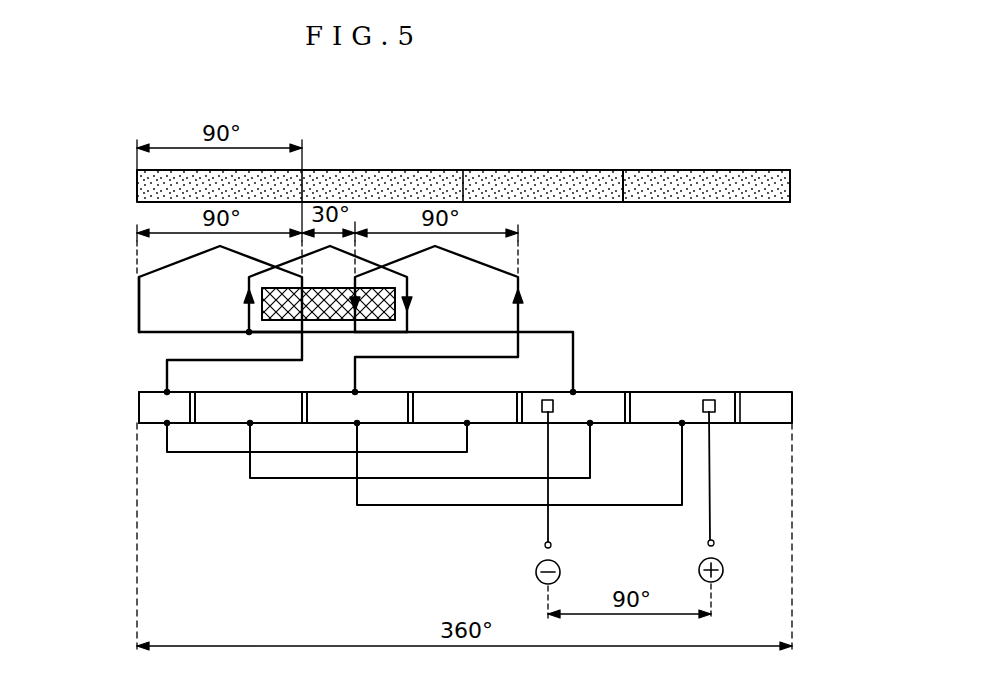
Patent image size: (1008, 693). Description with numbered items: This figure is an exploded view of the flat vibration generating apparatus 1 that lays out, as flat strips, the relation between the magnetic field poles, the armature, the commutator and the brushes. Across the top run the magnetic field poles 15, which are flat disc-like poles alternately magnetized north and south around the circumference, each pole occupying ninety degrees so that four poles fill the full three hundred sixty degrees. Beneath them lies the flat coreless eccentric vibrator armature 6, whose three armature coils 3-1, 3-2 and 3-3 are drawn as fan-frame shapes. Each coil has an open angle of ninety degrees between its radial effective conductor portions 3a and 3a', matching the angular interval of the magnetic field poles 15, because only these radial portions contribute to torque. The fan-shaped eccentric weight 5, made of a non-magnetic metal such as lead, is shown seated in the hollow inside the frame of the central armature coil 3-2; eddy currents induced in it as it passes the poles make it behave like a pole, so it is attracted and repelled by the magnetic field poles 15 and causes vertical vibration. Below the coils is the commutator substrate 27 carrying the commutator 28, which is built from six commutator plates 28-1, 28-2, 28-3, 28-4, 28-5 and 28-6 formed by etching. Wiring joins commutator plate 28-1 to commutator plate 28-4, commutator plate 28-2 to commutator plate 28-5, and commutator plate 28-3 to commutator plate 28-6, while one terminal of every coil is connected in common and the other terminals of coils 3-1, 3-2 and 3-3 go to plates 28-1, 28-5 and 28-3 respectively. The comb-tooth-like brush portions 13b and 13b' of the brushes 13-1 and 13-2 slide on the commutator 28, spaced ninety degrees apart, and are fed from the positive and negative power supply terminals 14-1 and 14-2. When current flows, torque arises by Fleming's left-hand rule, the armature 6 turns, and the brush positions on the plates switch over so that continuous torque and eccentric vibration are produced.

The flat vibration generating apparatus 1 is at (616, 155).
The magnetic field poles 15 is at (775, 185).
The flat coreless eccentric vibrator armature 6 is at (328, 305).
The armature coil 3-1 is at (165, 260).
The armature coil 3-2 is at (380, 256).
The armature coil 3-3 is at (528, 289).
The effective conductor portion 3a is at (97, 324).
The effective conductor portion 3a' is at (287, 300).
The eccentric weight 5 is at (335, 321).
The commutator substrate 27 is at (448, 445).
The commutator 28 is at (803, 405).
The commutator plate 28-1 is at (162, 410).
The commutator plate 28-2 is at (232, 412).
The commutator plate 28-3 is at (325, 412).
The commutator plate 28-4 is at (435, 410).
The commutator plate 28-5 is at (598, 402).
The commutator plate 28-6 is at (656, 400).
The brush portion 13b is at (770, 416).
The brush 13-1 is at (712, 400).
The brush portion 13b' is at (479, 473).
The brush 13-2 is at (541, 416).
The positive power supply terminal 14-1 is at (706, 543).
The negative power supply terminal 14-2 is at (543, 546).